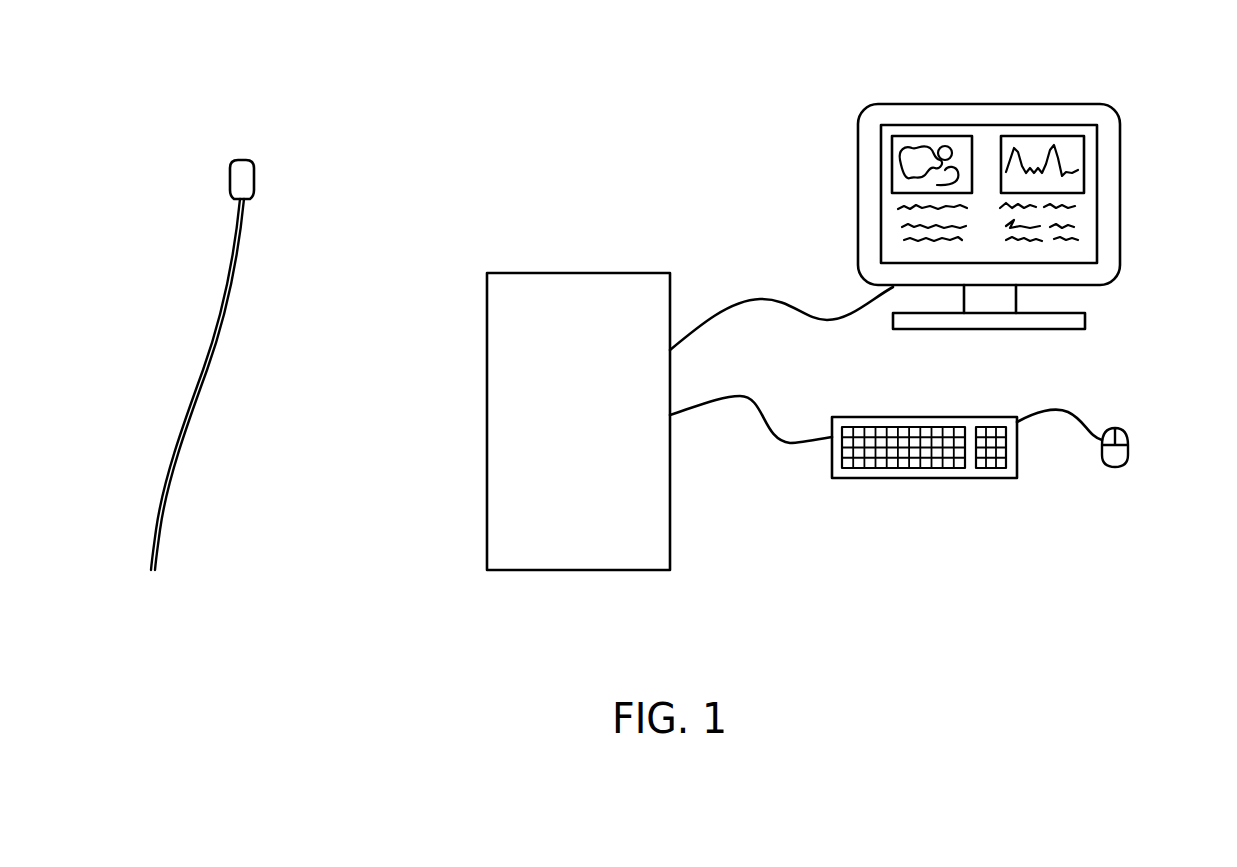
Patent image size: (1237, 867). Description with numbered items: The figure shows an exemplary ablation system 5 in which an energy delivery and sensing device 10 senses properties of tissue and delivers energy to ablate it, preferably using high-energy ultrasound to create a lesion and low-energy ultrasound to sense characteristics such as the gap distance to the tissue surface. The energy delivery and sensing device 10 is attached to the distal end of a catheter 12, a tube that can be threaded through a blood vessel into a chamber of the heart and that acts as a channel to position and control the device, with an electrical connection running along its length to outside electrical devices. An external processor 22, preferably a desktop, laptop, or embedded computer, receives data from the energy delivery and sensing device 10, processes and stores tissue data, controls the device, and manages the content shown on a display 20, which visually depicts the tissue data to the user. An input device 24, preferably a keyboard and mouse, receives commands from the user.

The system 5 is at (858, 33).
The energy delivery and sensing device 10 is at (243, 159).
The catheter 12 is at (217, 330).
The display 20 is at (1121, 127).
The external processor 22 is at (584, 273).
The input device 24 is at (942, 478).